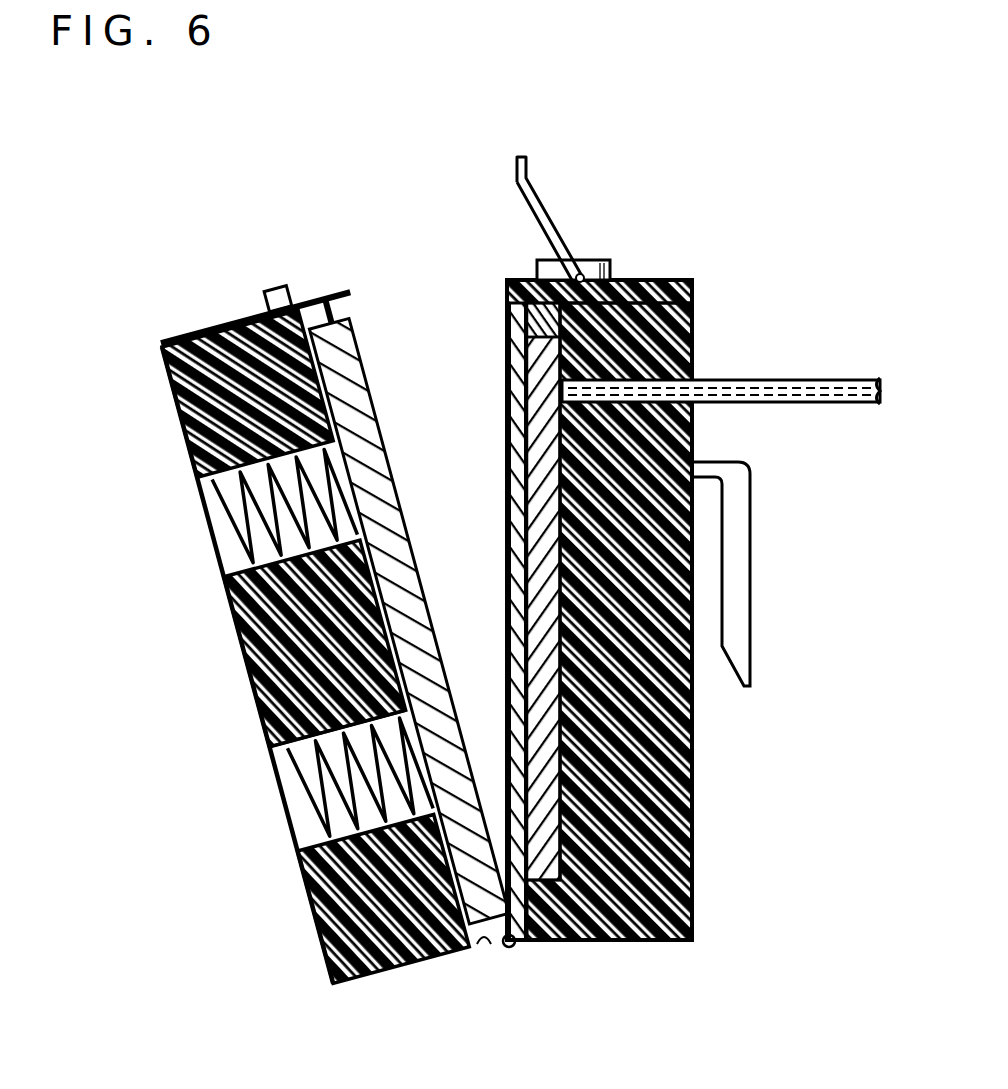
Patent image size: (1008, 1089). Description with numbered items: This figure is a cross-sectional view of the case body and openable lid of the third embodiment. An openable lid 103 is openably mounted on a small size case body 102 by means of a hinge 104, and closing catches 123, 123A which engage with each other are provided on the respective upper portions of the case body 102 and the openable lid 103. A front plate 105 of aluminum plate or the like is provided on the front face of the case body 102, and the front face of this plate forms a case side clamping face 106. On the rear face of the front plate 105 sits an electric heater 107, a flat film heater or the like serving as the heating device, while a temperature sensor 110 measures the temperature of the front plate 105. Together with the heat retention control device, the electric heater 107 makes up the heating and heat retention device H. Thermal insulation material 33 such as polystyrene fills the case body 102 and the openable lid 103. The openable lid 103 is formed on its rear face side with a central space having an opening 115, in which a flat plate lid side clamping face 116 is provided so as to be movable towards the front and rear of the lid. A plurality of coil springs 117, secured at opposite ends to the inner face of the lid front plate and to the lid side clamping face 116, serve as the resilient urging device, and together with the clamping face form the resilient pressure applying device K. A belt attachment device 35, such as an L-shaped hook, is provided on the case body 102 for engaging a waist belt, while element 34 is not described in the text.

The thermal insulation material 33 is at (270, 655).
The shaft 34 is at (770, 380).
The belt attachment device 35 is at (743, 540).
The case body 102 is at (667, 279).
The openable lid 103 is at (183, 462).
The hinge 104 is at (514, 947).
The front plate 105 is at (513, 330).
The case side clamping face 106 is at (525, 387).
The electric heater 107 is at (550, 783).
The temperature sensor 110 is at (565, 335).
The opening 115 is at (480, 948).
The lid side clamping face 116 is at (388, 473).
The coil springs 117 is at (233, 535).
The closing catch 123 is at (527, 168).
The closing catch 123A is at (273, 287).
The resilient pressure applying device K is at (312, 748).
The heating and heat retention device H is at (567, 827).